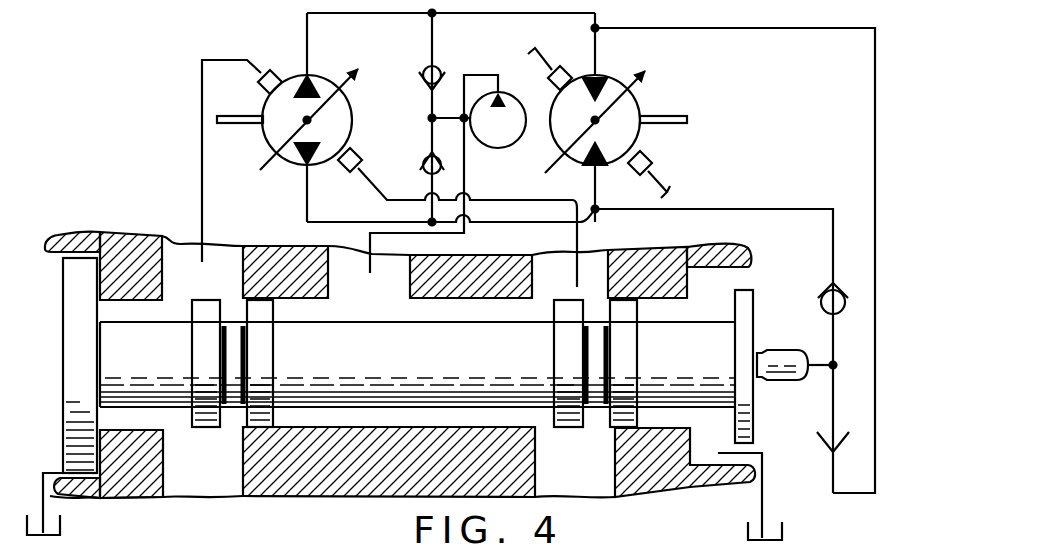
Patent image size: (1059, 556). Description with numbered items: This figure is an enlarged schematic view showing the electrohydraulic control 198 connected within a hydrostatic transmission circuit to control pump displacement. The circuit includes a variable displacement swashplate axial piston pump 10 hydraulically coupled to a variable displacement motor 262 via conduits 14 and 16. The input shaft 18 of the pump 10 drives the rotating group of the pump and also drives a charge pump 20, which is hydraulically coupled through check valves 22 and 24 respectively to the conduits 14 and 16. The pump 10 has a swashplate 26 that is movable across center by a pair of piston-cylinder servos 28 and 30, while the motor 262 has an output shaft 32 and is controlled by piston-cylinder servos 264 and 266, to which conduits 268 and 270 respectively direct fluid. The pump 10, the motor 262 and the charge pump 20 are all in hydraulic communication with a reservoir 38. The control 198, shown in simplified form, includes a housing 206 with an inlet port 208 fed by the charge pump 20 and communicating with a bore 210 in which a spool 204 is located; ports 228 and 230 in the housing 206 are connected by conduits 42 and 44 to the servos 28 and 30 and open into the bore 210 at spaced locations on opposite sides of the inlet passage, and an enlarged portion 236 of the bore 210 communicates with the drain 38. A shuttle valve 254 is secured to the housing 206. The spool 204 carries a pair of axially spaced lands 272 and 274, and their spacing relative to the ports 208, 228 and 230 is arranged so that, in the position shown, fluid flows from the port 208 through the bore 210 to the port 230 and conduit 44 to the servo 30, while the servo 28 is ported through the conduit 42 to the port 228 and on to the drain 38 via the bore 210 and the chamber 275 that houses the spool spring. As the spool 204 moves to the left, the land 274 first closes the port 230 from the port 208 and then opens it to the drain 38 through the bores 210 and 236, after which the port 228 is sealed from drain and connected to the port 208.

The variable displacement swashplate axial piston pump 10 is at (363, 109).
The conduit 14 is at (736, 28).
The conduit 16 is at (792, 210).
The input shaft 18 is at (227, 143).
The charge pump 20 is at (485, 157).
The check valve 22 is at (443, 76).
The check valve 24 is at (422, 153).
The swashplate 26 is at (259, 165).
The piston-cylinder servo 28 is at (273, 71).
The piston-cylinder servo 30 is at (357, 153).
The output shaft 32 is at (687, 124).
The reservoir 38 is at (62, 522).
The conduit 42 is at (202, 60).
The conduit 44 is at (385, 200).
The electrohydraulic control 198 is at (146, 230).
The spool 204 is at (405, 319).
The housing 206 is at (733, 252).
The inlet port 208 is at (408, 289).
The bore 210 is at (383, 426).
The port 228 is at (243, 285).
The port 230 is at (606, 290).
The enlarged portion of bore 236 is at (705, 460).
The shuttle valve 254 is at (806, 326).
The variable displacement motor 262 is at (643, 100).
The piston-cylinder servo 264 is at (566, 68).
The piston-cylinder servo 266 is at (633, 173).
The conduit 268 is at (545, 67).
The conduit 270 is at (680, 190).
The land 272 is at (228, 434).
The land 274 is at (595, 432).
The chamber 275 is at (45, 250).